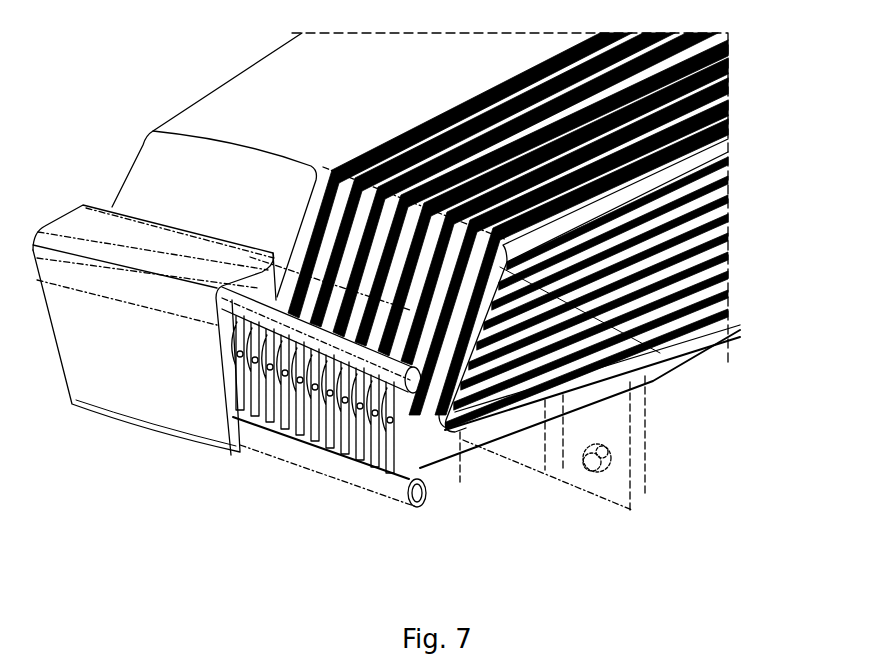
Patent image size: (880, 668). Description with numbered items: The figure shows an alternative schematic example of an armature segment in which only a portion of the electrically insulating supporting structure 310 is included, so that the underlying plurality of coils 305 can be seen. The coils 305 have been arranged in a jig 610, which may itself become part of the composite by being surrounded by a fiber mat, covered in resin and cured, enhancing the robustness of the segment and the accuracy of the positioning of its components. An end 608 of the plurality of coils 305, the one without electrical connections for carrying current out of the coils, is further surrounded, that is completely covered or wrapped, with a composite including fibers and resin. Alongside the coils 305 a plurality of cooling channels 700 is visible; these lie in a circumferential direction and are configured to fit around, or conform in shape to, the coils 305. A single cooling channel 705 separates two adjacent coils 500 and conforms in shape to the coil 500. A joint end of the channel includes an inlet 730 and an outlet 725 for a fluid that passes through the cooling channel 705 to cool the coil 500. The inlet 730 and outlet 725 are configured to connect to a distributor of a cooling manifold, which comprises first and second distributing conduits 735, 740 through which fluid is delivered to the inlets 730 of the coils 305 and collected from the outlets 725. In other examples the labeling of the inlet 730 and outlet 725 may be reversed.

The plurality of coils 305 is at (741, 84).
The electrically insulating supporting structure 310 is at (250, 96).
The coil 500 is at (718, 308).
The end of the plurality of coils 608 is at (250, 455).
The jig 610 is at (612, 427).
The plurality of cooling channels 700 is at (697, 378).
The cooling channel 705 is at (722, 334).
The outlet 725 is at (430, 497).
The inlet 730 is at (445, 432).
The first distributing conduit 735 is at (337, 461).
The second distributing conduit 740 is at (287, 421).